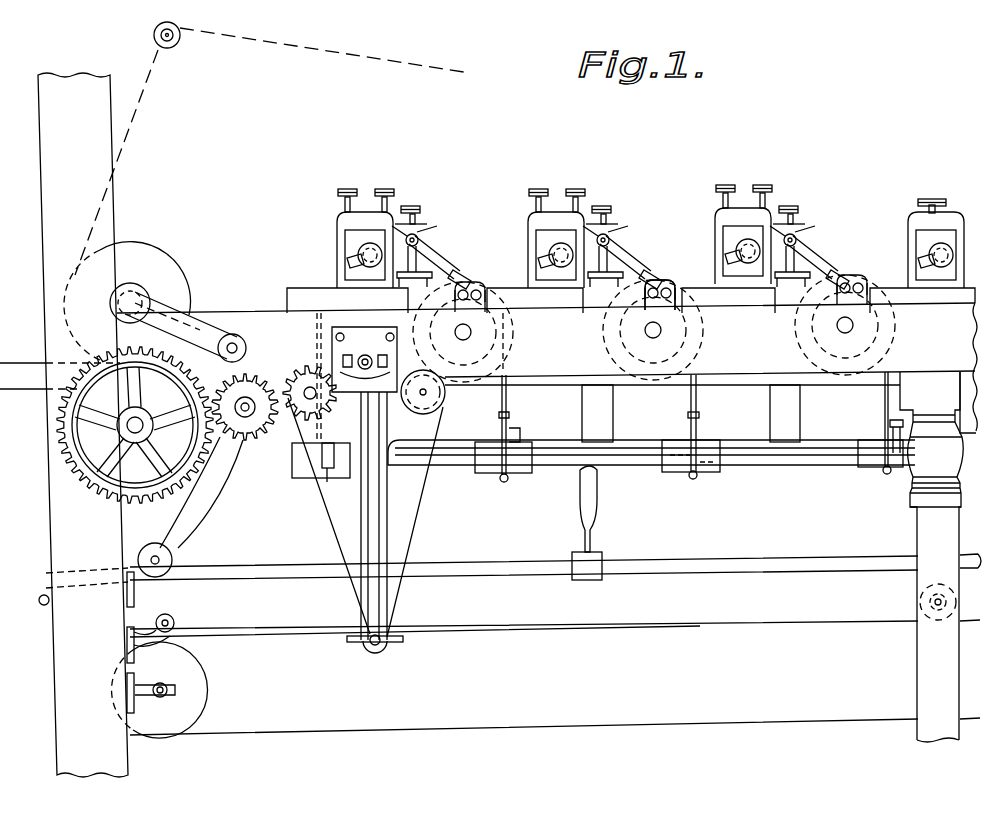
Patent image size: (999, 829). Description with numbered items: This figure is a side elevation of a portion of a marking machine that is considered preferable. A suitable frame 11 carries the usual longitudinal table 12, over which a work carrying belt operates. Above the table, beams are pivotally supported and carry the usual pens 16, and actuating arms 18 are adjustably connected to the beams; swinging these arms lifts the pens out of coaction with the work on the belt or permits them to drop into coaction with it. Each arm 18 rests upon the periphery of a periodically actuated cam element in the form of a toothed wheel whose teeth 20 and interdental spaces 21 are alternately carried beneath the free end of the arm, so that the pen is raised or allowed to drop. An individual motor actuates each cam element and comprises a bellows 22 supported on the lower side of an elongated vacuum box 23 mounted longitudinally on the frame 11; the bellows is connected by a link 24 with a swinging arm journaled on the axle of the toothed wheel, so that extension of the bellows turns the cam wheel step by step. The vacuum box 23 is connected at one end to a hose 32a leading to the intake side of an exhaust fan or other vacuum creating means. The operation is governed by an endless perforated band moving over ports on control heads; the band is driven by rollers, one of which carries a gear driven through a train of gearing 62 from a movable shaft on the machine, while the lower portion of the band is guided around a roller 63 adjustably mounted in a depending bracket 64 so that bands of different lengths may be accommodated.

The frame 11 is at (920, 527).
The longitudinal table 12 is at (683, 272).
The pens 16 is at (821, 249).
The actuating arms 18 is at (626, 243).
The teeth 20 is at (632, 300).
The interdental spaces 21 is at (602, 308).
The bellows 22 is at (676, 472).
The vacuum box 23 is at (762, 442).
The link 24 is at (700, 418).
The hose 32a is at (214, 509).
The train of gearing 62 is at (263, 376).
The roller 63 is at (367, 623).
The depending bracket 64 is at (380, 538).